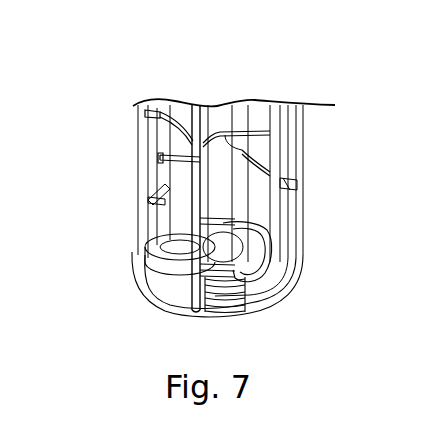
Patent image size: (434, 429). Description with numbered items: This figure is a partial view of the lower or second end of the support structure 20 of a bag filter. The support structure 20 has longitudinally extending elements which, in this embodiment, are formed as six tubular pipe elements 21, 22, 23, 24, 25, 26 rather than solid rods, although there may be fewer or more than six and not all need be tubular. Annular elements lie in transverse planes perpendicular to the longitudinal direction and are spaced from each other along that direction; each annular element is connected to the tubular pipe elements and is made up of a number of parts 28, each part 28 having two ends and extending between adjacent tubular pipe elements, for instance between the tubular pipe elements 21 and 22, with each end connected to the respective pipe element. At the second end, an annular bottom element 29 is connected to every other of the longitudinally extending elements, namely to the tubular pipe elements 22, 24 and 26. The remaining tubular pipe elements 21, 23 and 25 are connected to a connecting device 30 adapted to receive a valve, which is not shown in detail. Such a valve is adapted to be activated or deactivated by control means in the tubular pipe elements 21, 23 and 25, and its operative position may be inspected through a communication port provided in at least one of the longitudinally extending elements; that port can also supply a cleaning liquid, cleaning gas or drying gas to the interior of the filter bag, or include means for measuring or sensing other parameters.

The support structure 20 is at (137, 94).
The tubular pipe element 21 is at (147, 122).
The tubular pipe element 22 is at (197, 230).
The tubular pipe element 23 is at (275, 238).
The tubular pipe element 24 is at (297, 157).
The tubular pipe element 25 is at (239, 110).
The tubular pipe element 26 is at (163, 112).
The part 28 is at (174, 210).
The annular bottom element 29 is at (170, 308).
The connecting device 30 is at (208, 276).